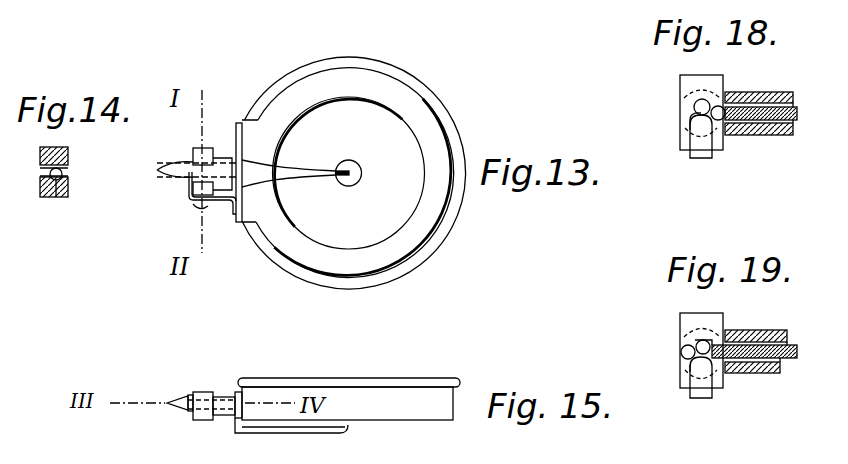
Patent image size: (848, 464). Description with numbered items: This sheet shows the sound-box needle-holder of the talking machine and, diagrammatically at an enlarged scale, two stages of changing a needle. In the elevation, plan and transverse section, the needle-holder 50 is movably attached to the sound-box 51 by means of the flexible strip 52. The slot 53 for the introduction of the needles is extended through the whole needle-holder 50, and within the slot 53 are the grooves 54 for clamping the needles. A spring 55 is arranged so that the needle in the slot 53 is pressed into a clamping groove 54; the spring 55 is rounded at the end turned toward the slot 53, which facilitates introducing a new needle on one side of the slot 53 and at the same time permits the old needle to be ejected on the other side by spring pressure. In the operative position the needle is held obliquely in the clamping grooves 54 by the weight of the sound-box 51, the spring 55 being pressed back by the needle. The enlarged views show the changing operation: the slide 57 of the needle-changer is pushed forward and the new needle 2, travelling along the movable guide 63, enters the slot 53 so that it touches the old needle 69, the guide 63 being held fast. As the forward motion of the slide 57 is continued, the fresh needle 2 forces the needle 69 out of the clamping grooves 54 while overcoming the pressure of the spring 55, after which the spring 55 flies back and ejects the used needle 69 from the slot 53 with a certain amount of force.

In FIG. 18, the needle 2 is at (760, 106).
In FIG. 19, the needle 2 is at (722, 346).
In FIG. 13, the needle-holder 50 is at (194, 158).
In FIG. 14, the needle-holder 50 is at (68, 160).
In FIG. 15, the needle-holder 50 is at (205, 420).
In FIG. 18, the needle-holder 50 is at (680, 81).
In FIG. 19, the needle-holder 50 is at (680, 321).
In FIG. 13, the sound-box 51 is at (235, 129).
In FIG. 15, the sound-box 51 is at (236, 392).
In FIG. 13, the flexible strip 52 is at (345, 61).
In FIG. 15, the flexible strip 52 is at (381, 383).
In FIG. 13, the slot 53 is at (189, 190).
In FIG. 14, the slot 53 is at (40, 172).
In FIG. 18, the slot 53 is at (690, 118).
In FIG. 19, the slot 53 is at (690, 366).
In FIG. 14, the grooves 54 is at (78, 141).
In FIG. 18, the grooves 54 is at (694, 104).
In FIG. 19, the grooves 54 is at (696, 344).
In FIG. 13, the spring 55 is at (200, 202).
In FIG. 14, the spring 55 is at (60, 195).
In FIG. 15, the spring 55 is at (190, 393).
In FIG. 18, the spring 55 is at (702, 158).
In FIG. 19, the spring 55 is at (700, 398).
In FIG. 18, the slide 57 is at (797, 121).
In FIG. 19, the slide 57 is at (790, 360).
In FIG. 18, the guide 63 is at (762, 110).
In FIG. 19, the guide 63 is at (757, 343).
In FIG. 18, the needle 69 is at (722, 108).
In FIG. 19, the needle 69 is at (682, 353).